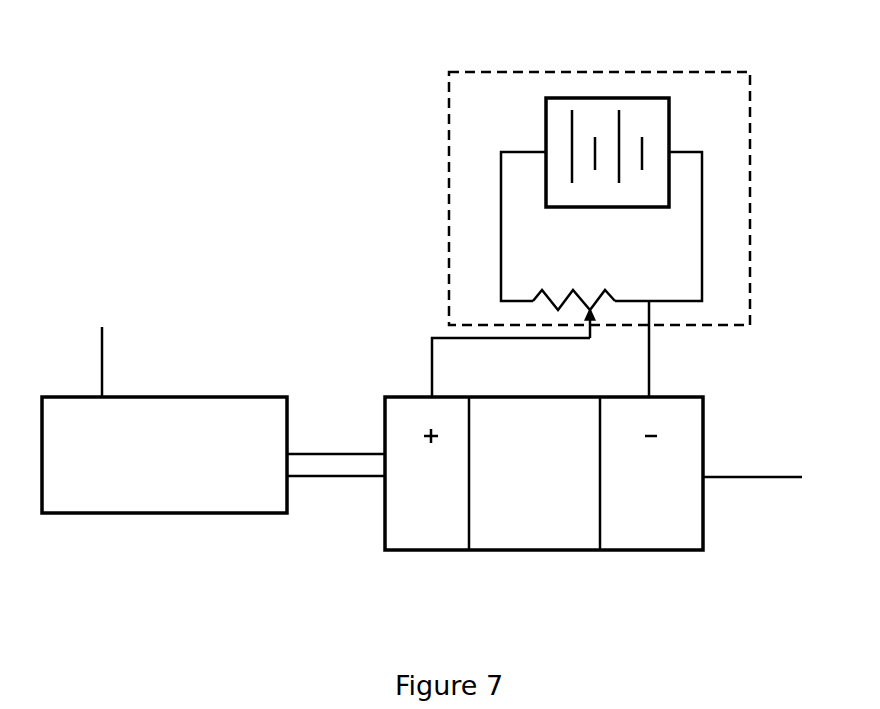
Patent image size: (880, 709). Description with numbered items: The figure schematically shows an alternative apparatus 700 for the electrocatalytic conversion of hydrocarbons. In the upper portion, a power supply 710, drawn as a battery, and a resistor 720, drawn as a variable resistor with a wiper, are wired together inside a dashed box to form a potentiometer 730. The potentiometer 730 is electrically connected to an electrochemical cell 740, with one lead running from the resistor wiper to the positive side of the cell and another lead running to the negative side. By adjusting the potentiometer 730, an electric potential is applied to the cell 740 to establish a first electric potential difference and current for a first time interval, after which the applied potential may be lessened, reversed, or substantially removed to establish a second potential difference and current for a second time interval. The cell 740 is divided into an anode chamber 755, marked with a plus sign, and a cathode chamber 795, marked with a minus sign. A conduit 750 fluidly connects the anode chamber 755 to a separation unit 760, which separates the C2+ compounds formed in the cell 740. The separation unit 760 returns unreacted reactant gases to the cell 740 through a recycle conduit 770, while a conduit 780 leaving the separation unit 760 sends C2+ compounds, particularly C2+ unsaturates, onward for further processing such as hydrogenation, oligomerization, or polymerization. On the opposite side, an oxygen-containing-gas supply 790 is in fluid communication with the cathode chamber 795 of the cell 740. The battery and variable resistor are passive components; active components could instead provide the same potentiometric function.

The apparatus 700 is at (205, 110).
The power supply 710 is at (608, 97).
The resistor 720 is at (605, 290).
The potentiometer 730 is at (750, 248).
The electrochemical cell 740 is at (544, 516).
The conduit 750 is at (337, 450).
The anode chamber 755 is at (427, 469).
The separation unit 760 is at (164, 455).
The recycle conduit 770 is at (305, 478).
The conduit 780 is at (97, 367).
The oxygen-containing-gas supply 790 is at (750, 478).
The cathode chamber 795 is at (645, 475).